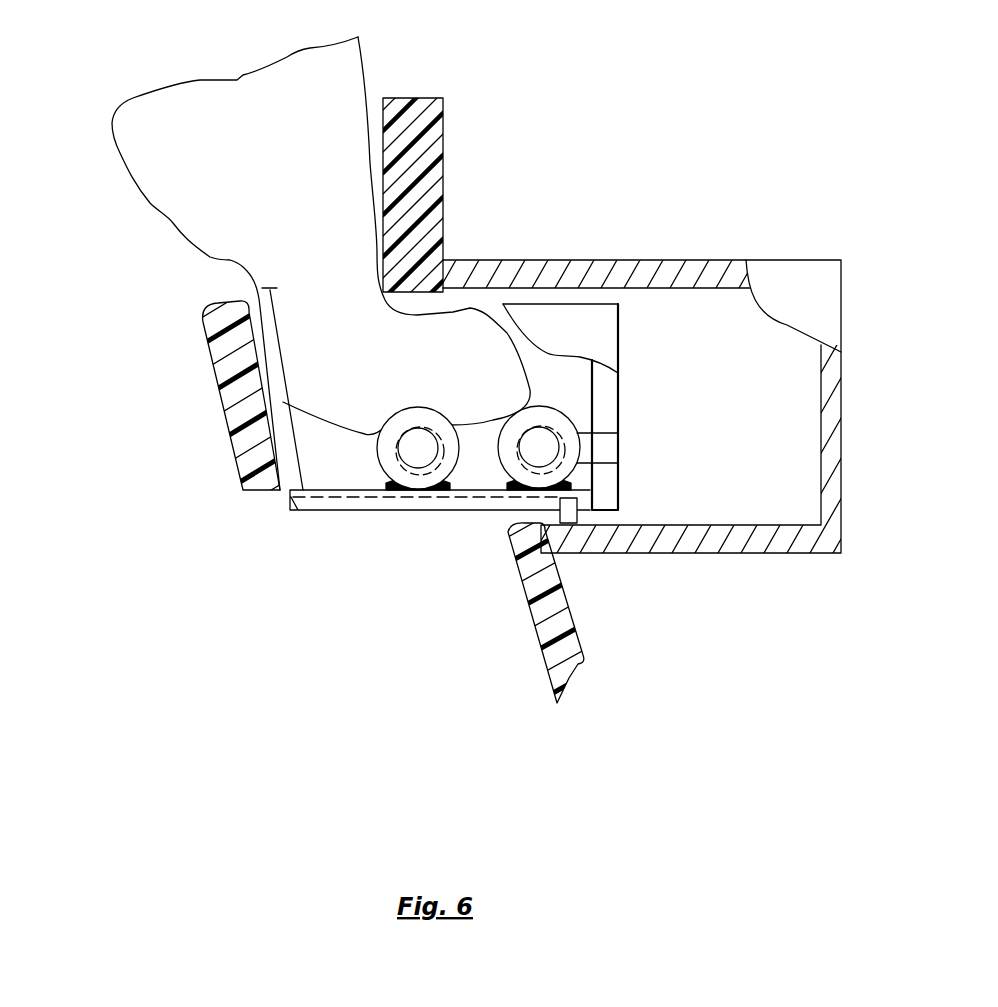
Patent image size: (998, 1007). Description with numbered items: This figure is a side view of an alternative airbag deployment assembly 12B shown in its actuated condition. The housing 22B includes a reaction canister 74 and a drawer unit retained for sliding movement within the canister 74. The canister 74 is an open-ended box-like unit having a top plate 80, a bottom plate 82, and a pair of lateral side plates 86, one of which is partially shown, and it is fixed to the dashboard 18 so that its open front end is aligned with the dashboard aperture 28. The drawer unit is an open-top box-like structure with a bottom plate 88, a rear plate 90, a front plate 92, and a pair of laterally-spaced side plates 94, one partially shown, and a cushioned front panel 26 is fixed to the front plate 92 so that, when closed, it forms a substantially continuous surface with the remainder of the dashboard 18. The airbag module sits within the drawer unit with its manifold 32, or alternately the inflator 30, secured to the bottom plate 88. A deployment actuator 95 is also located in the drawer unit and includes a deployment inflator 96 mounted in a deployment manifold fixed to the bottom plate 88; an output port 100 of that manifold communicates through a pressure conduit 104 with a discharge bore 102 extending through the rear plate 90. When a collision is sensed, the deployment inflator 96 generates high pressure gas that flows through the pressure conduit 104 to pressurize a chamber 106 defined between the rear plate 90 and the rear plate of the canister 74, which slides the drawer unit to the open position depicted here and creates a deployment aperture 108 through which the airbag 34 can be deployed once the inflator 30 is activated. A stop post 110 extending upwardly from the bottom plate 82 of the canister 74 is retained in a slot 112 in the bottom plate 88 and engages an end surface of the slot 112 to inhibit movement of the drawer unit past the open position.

The airbag deployment assembly 12B is at (730, 608).
The dashboard 18 is at (445, 168).
The housing 22B is at (662, 230).
The cushioned front panel 26 is at (232, 400).
The dashboard aperture 28 is at (510, 517).
The inflator 30 is at (410, 443).
The manifold 32 is at (387, 427).
The airbag 34 is at (259, 163).
The reaction canister 74 is at (842, 470).
The top plate 80 is at (725, 287).
The bottom plate 82 is at (692, 545).
The lateral side plate 86 is at (812, 295).
The bottom plate 88 is at (268, 492).
The rear plate 90 is at (605, 483).
The front plate 92 is at (262, 327).
The side plate 94 is at (607, 337).
The deployment actuator 95 is at (549, 400).
The deployment inflator 96 is at (537, 447).
The output port 100 is at (577, 447).
The discharge bore 102 is at (617, 437).
The pressure conduit 104 is at (628, 371).
The chamber 106 is at (769, 447).
The deployment aperture 108 is at (277, 288).
The stop post 110 is at (568, 513).
The slot 112 is at (297, 502).